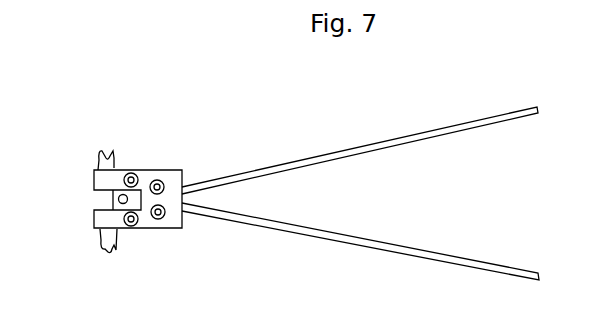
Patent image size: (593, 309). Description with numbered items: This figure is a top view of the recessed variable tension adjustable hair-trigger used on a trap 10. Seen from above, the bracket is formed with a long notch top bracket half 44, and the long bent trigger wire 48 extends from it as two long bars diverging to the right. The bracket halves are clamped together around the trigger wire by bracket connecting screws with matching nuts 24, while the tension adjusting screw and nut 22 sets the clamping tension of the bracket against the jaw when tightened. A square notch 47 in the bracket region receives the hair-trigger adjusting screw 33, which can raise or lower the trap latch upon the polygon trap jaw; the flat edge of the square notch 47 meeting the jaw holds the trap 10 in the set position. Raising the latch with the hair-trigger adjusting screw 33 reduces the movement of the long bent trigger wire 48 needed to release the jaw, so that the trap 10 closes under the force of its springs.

The trap 10 is at (97, 165).
The tension adjusting screw and nut 22 is at (124, 180).
The bracket connecting screws with matching nuts 24 is at (163, 191).
The hair-trigger adjusting screw 33 is at (117, 204).
The long notch top bracket half 44 is at (173, 230).
The square notch 47 is at (100, 193).
The long bent trigger wire 48 is at (435, 253).